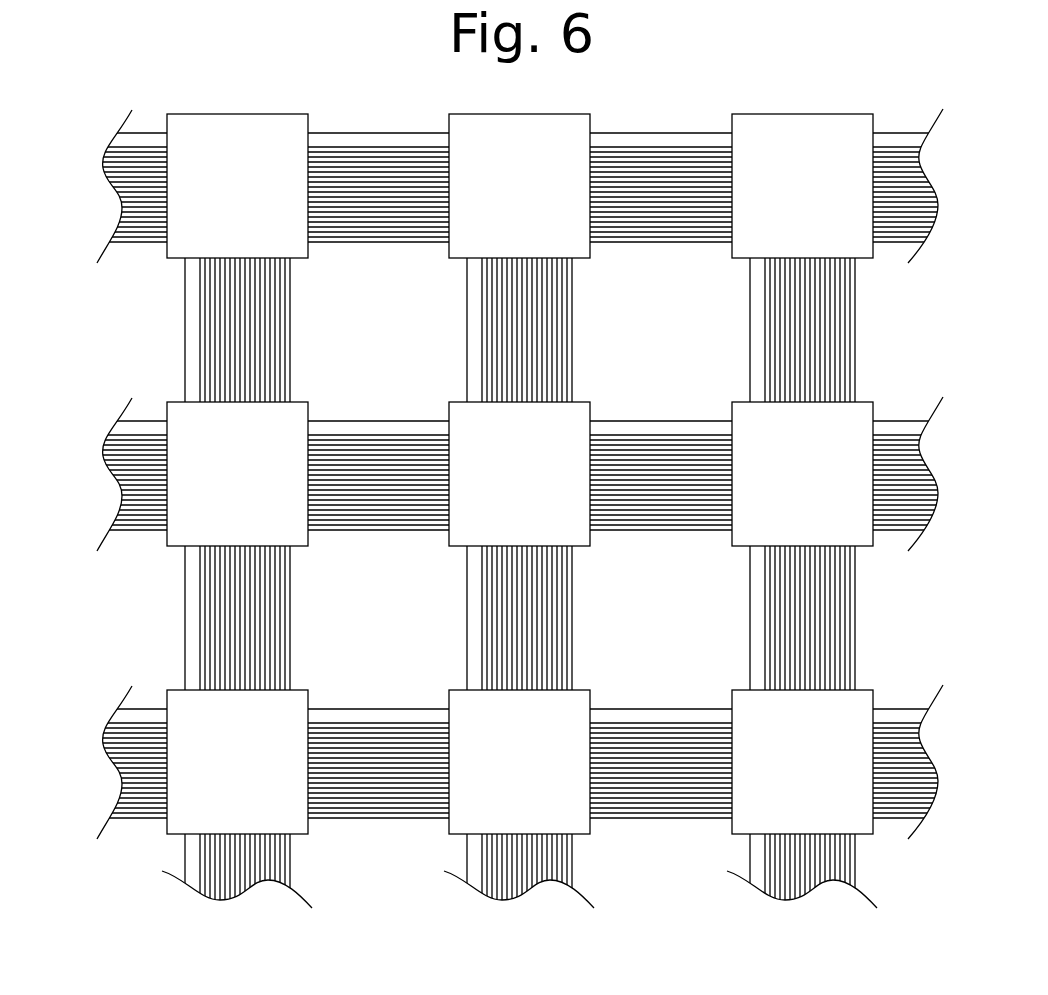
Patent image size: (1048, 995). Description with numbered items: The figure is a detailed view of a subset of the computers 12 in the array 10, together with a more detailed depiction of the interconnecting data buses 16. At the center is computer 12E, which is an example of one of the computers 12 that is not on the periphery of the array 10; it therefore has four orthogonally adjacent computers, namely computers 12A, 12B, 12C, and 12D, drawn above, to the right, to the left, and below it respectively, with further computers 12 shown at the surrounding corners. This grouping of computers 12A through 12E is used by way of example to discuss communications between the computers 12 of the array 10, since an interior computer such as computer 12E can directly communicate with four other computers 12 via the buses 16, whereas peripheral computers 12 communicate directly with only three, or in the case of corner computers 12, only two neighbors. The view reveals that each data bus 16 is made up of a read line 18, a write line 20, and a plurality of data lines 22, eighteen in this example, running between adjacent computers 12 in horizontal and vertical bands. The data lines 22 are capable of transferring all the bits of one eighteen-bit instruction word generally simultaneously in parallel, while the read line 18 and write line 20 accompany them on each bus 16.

The array 10 is at (952, 304).
The computer 12 is at (222, 197).
The computer 12A is at (497, 197).
The computer 12B is at (780, 485).
The computer 12C is at (215, 485).
The computer 12D is at (497, 773).
The computer 12E is at (497, 485).
The data bus 16 is at (643, 388).
The read line 18 is at (375, 420).
The write line 20 is at (335, 438).
The data lines 22 is at (642, 510).